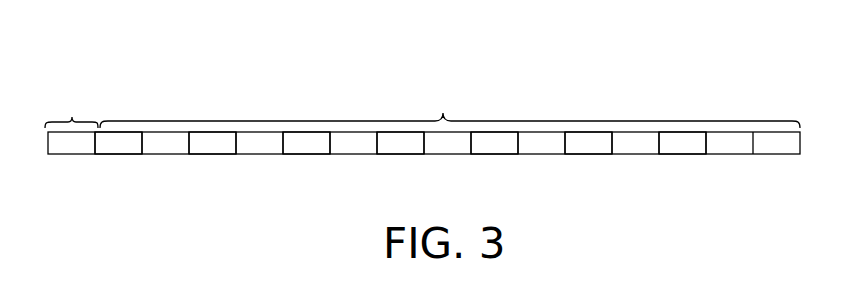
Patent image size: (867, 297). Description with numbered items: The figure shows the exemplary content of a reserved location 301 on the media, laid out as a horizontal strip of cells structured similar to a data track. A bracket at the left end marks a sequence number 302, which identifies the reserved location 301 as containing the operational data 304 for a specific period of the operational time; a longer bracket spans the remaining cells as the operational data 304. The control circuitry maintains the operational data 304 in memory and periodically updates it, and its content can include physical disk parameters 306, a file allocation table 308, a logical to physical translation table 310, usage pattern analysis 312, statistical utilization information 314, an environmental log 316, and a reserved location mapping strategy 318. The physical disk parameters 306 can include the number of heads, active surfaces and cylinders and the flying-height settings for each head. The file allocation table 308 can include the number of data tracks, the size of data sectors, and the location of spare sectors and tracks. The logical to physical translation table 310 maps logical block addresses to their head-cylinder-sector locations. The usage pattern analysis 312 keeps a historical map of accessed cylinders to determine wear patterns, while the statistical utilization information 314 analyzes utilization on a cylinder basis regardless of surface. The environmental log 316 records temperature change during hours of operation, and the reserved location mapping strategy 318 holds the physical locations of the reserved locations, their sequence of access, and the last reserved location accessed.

The reserved location 301 is at (160, 45).
The sequence number 302 is at (72, 117).
The operational data 304 is at (443, 113).
The physical disk parameters 306 is at (127, 143).
The file allocation table 308 is at (217, 143).
The logical to physical translation table 310 is at (296, 146).
The usage pattern analysis 312 is at (398, 143).
The statistical utilization information 314 is at (490, 143).
The environmental log 316 is at (587, 145).
The reserved location mapping strategy 318 is at (683, 145).